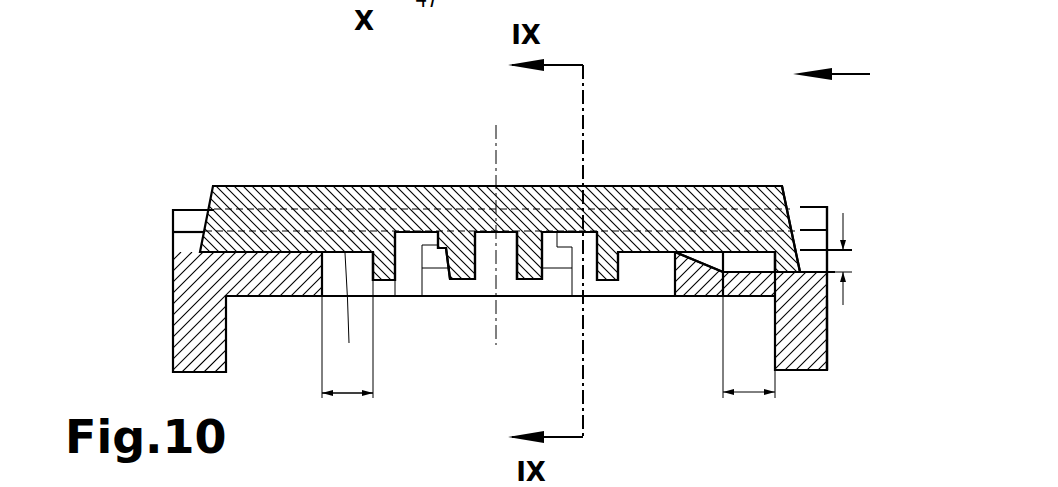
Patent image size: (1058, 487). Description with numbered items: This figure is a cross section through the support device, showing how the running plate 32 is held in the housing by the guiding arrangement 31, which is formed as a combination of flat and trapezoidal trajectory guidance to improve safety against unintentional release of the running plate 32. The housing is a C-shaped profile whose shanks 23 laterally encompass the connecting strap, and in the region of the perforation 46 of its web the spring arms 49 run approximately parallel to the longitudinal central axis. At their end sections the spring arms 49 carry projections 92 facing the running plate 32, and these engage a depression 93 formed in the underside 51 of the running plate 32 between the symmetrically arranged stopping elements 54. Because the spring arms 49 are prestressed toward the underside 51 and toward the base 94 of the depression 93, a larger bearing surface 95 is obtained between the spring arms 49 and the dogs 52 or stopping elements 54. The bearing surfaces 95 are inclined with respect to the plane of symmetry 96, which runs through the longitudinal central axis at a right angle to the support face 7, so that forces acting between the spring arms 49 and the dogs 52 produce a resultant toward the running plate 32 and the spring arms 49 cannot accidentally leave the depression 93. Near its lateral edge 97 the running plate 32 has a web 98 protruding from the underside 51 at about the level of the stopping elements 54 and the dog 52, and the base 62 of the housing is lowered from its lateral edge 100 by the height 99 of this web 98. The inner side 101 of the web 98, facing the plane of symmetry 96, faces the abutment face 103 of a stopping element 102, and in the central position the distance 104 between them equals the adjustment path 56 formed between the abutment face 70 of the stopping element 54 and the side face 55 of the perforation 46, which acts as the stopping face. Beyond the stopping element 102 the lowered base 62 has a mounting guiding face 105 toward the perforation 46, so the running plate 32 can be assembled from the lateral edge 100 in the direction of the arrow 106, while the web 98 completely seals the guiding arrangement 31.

The support face 7 is at (601, 182).
The shanks 23 is at (805, 337).
The guiding arrangement 31 is at (150, 213).
The running plate 32 is at (233, 220).
The perforation 46 is at (682, 322).
The spring arms 49 is at (557, 267).
The underside 51 is at (548, 325).
The dogs 52 is at (545, 262).
The stopping elements 54 is at (618, 282).
The side face 55 is at (347, 250).
The adjustment path 56 is at (348, 393).
The base 62 is at (188, 248).
The abutment face 70 is at (385, 273).
The projections 92 is at (460, 268).
The depression 93 is at (409, 272).
The base 94 is at (590, 236).
The bearing surface 95 is at (540, 275).
The plane of symmetry 96 is at (494, 150).
The lateral edge 97 is at (805, 215).
The web 98 is at (848, 262).
The height 99 is at (845, 308).
The lateral edge 100 is at (836, 343).
The inner side 101 is at (790, 262).
The stopping element 102 is at (745, 262).
The abutment face 103 is at (765, 262).
The distance 104 is at (747, 397).
The mounting guiding face 105 is at (688, 253).
The arrow 106 is at (850, 72).